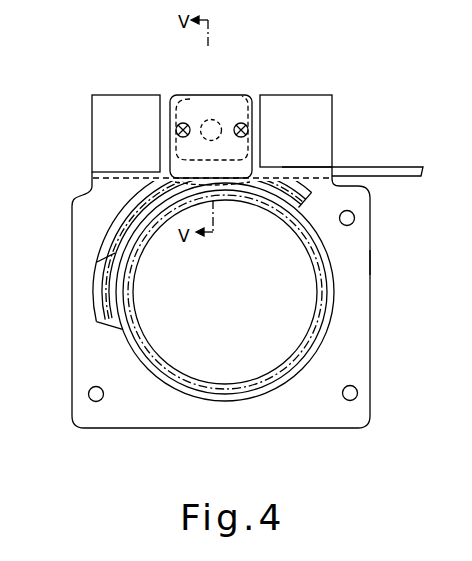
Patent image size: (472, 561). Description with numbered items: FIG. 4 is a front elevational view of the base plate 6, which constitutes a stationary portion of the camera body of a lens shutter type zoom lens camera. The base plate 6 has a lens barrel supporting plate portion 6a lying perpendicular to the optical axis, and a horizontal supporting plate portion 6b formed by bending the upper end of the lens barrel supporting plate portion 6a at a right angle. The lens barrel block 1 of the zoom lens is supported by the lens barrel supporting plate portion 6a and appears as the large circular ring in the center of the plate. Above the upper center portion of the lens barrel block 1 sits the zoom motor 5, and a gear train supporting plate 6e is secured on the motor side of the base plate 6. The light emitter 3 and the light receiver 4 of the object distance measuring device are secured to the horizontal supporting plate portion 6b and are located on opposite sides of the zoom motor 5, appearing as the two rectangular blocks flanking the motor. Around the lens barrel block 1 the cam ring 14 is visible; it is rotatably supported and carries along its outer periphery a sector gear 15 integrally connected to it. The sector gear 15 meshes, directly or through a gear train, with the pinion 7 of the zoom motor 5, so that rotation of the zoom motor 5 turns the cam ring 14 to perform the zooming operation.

The lens barrel block 1 is at (286, 379).
The light emitter 3 is at (316, 110).
The light receiver 4 is at (128, 103).
The zoom motor 5 is at (230, 100).
The base plate 6 is at (352, 346).
The lens barrel supporting plate portion 6a is at (370, 262).
The horizontal supporting plate portion 6b is at (332, 170).
The gear train supporting plate 6e is at (176, 100).
The pinion 7 is at (250, 104).
The cam ring 14 is at (298, 202).
The sector gear 15 is at (100, 260).